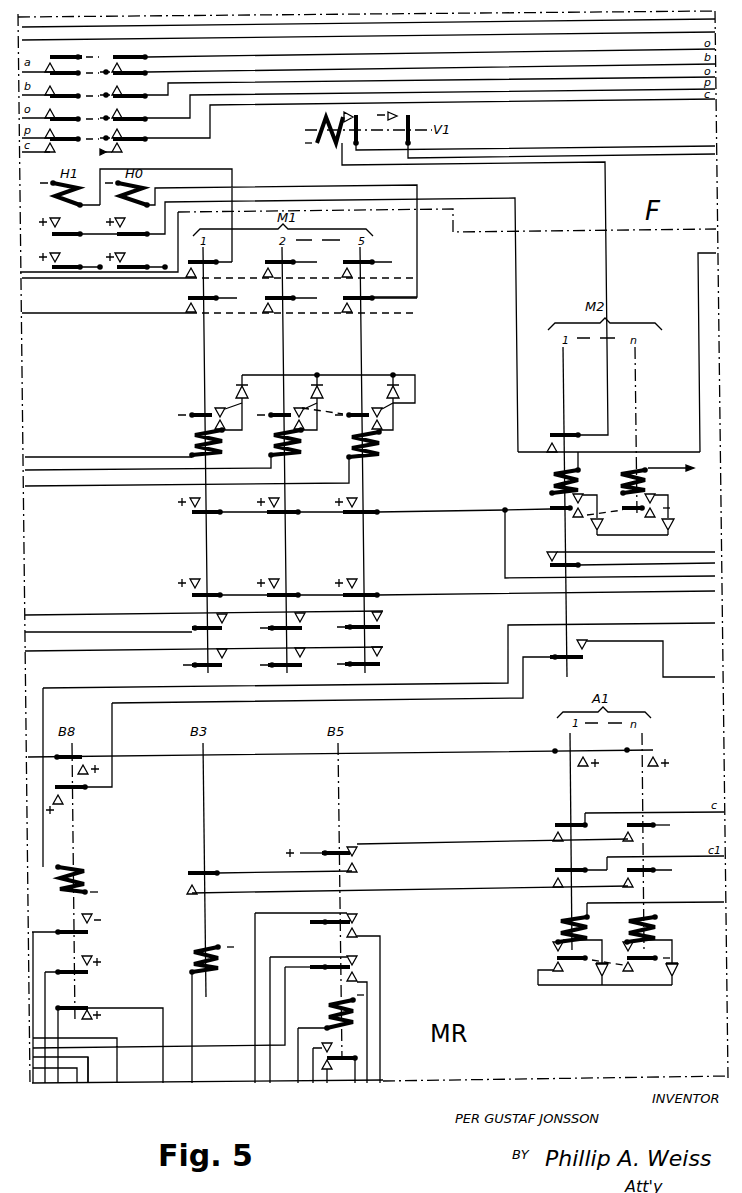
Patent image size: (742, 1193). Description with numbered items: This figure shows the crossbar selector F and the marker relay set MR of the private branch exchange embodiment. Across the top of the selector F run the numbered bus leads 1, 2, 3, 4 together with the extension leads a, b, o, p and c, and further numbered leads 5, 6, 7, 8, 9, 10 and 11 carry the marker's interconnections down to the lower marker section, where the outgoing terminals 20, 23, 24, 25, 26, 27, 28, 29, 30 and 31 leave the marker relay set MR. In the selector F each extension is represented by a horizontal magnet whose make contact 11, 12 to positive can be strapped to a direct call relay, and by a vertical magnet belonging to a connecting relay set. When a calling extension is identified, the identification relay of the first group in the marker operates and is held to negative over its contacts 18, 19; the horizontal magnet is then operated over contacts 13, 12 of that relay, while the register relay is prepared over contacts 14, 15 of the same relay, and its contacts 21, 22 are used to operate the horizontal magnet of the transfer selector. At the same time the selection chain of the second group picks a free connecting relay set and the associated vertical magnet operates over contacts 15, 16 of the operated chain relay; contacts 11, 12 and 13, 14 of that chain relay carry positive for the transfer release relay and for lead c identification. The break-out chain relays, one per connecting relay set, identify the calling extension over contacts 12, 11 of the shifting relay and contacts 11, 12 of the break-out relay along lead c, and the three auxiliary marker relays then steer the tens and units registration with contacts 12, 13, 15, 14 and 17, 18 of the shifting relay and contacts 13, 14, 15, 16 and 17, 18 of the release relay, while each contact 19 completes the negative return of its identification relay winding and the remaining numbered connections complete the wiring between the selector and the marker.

The lead 1 is at (368, 18).
The lead 2 is at (368, 31).
The lead 3 is at (368, 211).
The lead 4 is at (368, 228).
The lead 5 is at (370, 348).
The lead 6 is at (370, 503).
The lead 7 is at (370, 511).
The lead 8 is at (370, 563).
The lead 9 is at (370, 606).
The lead 10 is at (370, 650).
The contact 11 is at (372, 553).
The contact 12 is at (377, 587).
The contact 13 is at (301, 660).
The contact 14 is at (319, 807).
The contact 15 is at (297, 757).
The contact 16 is at (314, 743).
The contact 17 is at (219, 756).
The contact 18 is at (223, 741).
The contact 19 is at (217, 745).
The terminal 20 is at (85, 1074).
The contact 21 is at (243, 853).
The contact 22 is at (185, 852).
The terminal 23 is at (188, 1032).
The terminal 24 is at (296, 1001).
The terminal 25 is at (303, 1023).
The terminal 26 is at (307, 1059).
The terminal 27 is at (312, 1069).
The terminal 28 is at (324, 1075).
The terminal 29 is at (343, 1072).
The terminal 30 is at (364, 1036).
The terminal 31 is at (370, 1013).